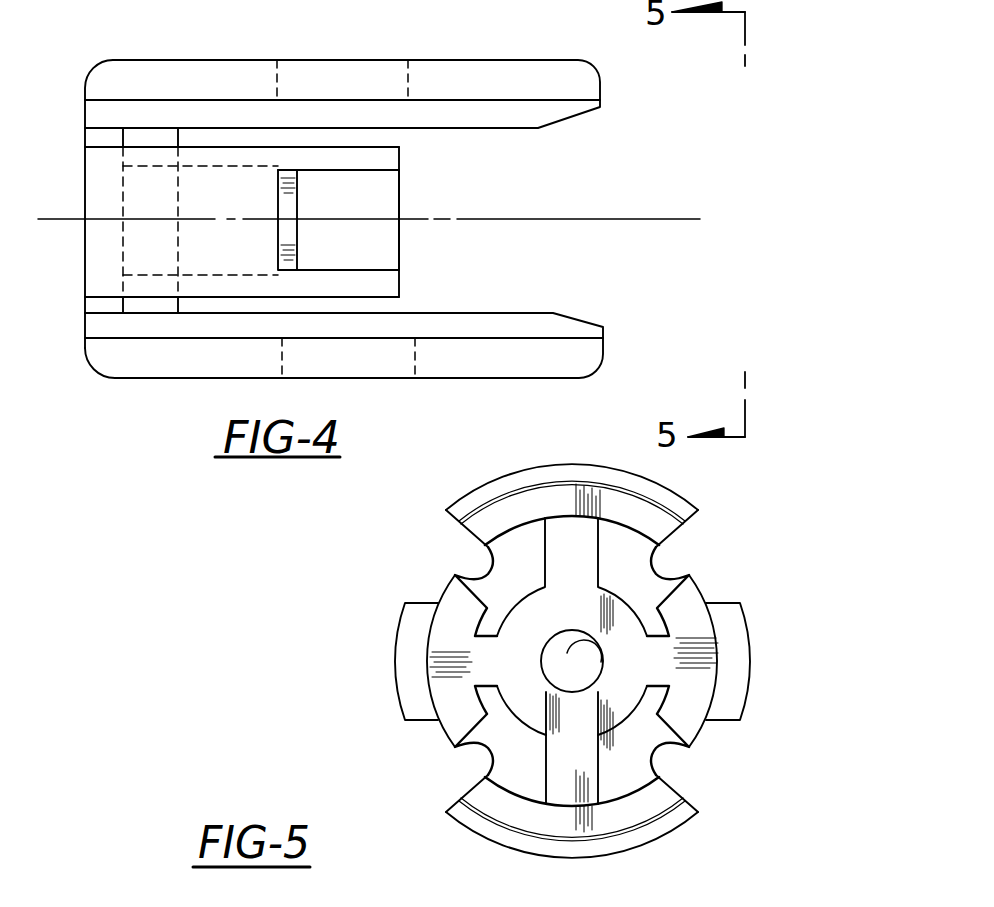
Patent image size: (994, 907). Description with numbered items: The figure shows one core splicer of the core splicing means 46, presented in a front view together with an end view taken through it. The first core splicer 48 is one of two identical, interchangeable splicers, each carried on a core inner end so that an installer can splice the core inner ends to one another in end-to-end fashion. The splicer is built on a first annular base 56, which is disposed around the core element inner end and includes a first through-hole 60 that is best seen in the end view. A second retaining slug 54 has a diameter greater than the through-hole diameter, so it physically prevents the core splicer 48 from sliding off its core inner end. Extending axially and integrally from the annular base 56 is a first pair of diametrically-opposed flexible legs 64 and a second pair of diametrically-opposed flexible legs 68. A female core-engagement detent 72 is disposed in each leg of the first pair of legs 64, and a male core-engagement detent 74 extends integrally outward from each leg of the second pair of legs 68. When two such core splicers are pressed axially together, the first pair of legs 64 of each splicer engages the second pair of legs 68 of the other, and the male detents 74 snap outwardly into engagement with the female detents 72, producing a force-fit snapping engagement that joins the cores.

In FIG. 4, the core splicing means 46 is at (118, 388).
In FIG. 5, the core splicing means 46 is at (674, 482).
In FIG. 4, the first core splicer 48 is at (190, 388).
In FIG. 5, the first core splicer 48 is at (700, 492).
In FIG. 4, the second retaining slug 54 is at (560, 75).
In FIG. 4, the first annular base 56 is at (85, 268).
In FIG. 5, the first annular base 56 is at (607, 710).
In FIG. 5, the first through-hole 60 is at (644, 655).
In FIG. 4, the first pair of diametrically-opposed flexible legs 64 is at (590, 352).
In FIG. 5, the first pair of diametrically-opposed flexible legs 64 is at (472, 522).
In FIG. 4, the second pair of diametrically-opposed flexible legs 68 is at (378, 243).
In FIG. 5, the second pair of diametrically-opposed flexible legs 68 is at (706, 695).
In FIG. 4, the female core-engagement detent 72 is at (355, 78).
In FIG. 5, the female core-engagement detent 72 is at (578, 492).
In FIG. 4, the male core-engagement detent 74 is at (375, 199).
In FIG. 5, the male core-engagement detent 74 is at (747, 641).